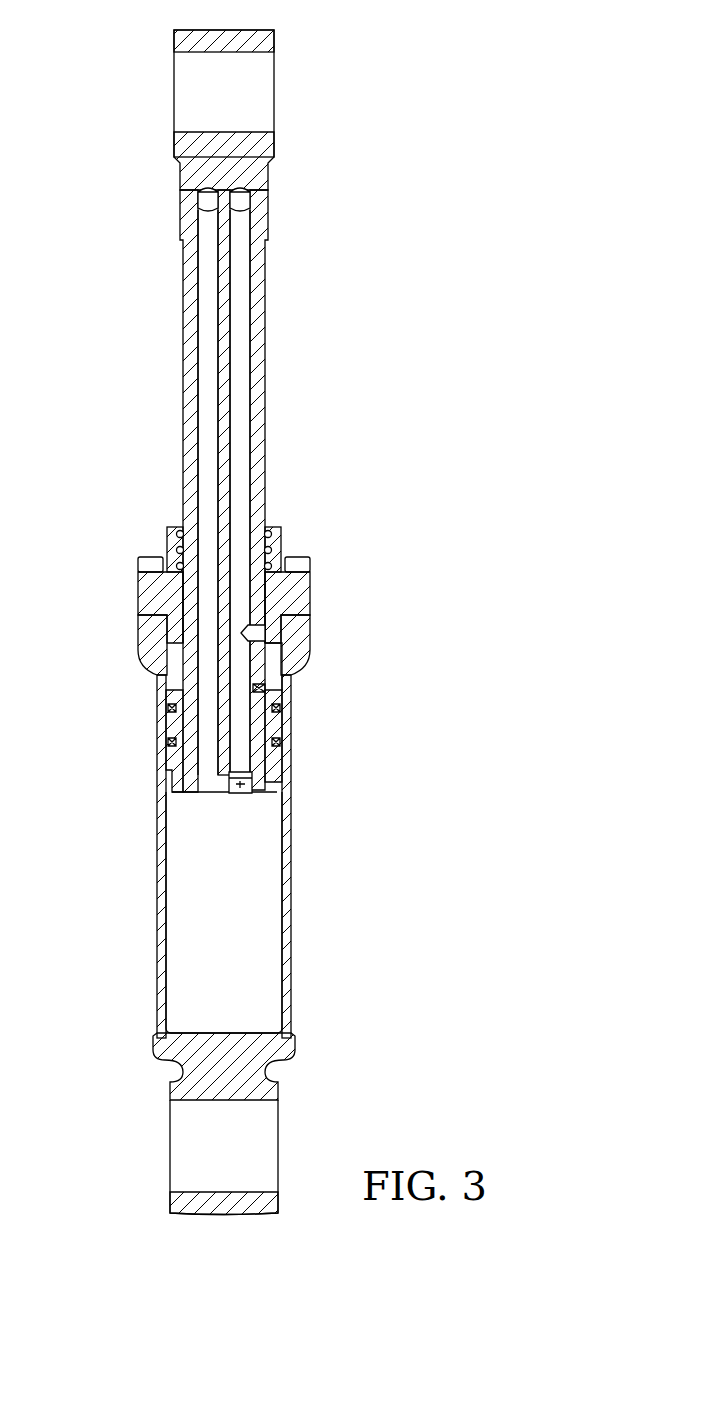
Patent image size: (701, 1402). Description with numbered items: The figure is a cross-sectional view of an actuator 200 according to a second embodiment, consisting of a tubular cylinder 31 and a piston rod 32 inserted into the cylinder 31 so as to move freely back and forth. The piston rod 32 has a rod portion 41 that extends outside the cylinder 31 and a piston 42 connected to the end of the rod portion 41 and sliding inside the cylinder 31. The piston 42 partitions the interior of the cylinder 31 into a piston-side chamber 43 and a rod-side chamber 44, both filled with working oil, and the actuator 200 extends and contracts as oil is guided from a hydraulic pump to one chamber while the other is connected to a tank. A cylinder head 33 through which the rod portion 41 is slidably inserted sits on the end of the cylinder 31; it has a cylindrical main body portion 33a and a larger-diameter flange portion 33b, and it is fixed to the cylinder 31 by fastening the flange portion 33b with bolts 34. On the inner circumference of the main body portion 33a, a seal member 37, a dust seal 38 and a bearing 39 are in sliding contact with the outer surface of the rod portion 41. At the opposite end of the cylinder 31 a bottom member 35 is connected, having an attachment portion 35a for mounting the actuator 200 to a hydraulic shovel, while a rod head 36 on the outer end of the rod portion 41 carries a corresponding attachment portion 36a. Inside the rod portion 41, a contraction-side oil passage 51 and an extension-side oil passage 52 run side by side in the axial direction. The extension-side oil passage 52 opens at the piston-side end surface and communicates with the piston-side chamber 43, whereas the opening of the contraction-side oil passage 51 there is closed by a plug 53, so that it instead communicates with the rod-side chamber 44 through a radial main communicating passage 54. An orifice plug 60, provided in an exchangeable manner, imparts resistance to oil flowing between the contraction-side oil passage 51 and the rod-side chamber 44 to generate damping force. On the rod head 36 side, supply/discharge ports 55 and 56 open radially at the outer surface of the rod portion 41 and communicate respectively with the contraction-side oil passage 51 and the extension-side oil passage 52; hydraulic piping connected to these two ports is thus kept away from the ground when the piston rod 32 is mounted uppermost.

The actuator 200 is at (312, 75).
The attachment portion 36a is at (203, 132).
The rod head 36 is at (195, 143).
The supply/discharge port 56 is at (190, 203).
The supply/discharge port 55 is at (258, 200).
The piston rod 32 is at (171, 345).
The rod portion 41 is at (190, 380).
The extension-side oil passage 52 is at (208, 435).
The contraction-side oil passage 51 is at (240, 440).
The dust seal 38 is at (282, 528).
The seal member 37 is at (276, 548).
The bolts 34 is at (150, 565).
The bearing 39 is at (270, 590).
The cylinder head 33 is at (75, 586).
The flange portion 33b is at (150, 600).
The main body portion 33a is at (160, 637).
The main communicating passage 54 is at (265, 633).
The rod-side chamber 44 is at (273, 671).
The orifice plug 60 is at (266, 688).
The piston 42 is at (178, 755).
The plug 53 is at (242, 793).
The cylinder 31 is at (160, 948).
The piston-side chamber 43 is at (263, 975).
The bottom member 35 is at (190, 1068).
The attachment portion 35a is at (190, 1100).